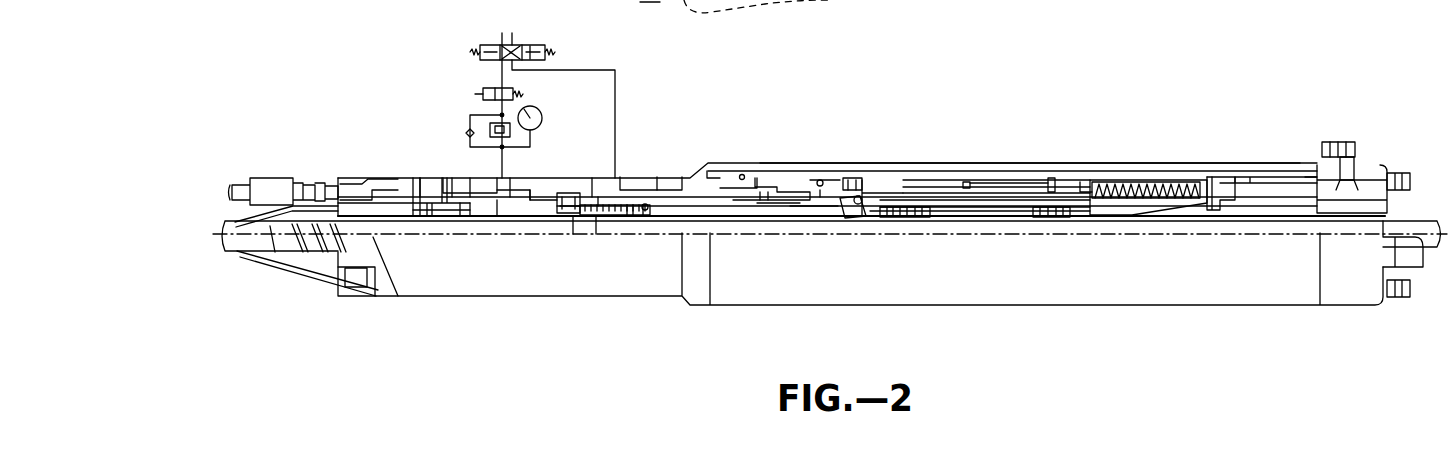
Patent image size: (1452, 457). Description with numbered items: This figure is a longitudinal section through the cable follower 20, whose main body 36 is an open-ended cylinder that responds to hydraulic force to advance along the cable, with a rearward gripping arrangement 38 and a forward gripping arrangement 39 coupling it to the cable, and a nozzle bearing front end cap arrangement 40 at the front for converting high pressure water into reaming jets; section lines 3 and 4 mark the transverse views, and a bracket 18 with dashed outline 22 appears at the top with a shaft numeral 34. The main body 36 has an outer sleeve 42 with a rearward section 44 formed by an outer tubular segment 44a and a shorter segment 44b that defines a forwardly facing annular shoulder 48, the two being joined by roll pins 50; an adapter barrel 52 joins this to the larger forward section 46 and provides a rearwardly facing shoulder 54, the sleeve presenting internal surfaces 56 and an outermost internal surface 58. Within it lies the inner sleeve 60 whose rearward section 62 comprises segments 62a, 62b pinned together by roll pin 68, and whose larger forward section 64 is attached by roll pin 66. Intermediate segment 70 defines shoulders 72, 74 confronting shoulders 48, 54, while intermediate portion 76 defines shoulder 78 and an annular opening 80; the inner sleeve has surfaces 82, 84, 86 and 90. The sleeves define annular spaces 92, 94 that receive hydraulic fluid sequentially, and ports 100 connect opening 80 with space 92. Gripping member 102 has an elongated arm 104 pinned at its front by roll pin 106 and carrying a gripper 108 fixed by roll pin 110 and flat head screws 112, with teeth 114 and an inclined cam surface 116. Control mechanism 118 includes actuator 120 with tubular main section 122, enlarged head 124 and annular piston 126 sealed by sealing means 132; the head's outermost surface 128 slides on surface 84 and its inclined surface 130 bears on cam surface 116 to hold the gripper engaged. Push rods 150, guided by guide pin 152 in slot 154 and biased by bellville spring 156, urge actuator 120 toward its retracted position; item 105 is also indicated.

The section line 3- 3 is at (252, 343).
The section line 4- 4 is at (866, 353).
The mounting structure 18 is at (635, 3).
The cable follower 20 is at (1015, 76).
The support 22 is at (693, 8).
The shaft 34 is at (603, 240).
The main body 36 is at (812, 150).
The rearward gripping arrangement 38 is at (288, 295).
The forward gripping arrangement 39 is at (775, 326).
The nozzle bearing front end cap arrangement 40 is at (1402, 150).
The outer sleeve 42 is at (584, 174).
The rearward section 44 is at (452, 172).
The outer tubular segment 44a is at (423, 178).
The shorter segment 44b is at (477, 178).
The forward section 46 is at (838, 196).
The annular shoulder 48 is at (512, 192).
The roll pins 50 is at (430, 178).
The adapter barrel 52 is at (692, 165).
The annular shoulder 54 is at (628, 195).
The internal surfaces 56 is at (390, 195).
The outermost internal surface 58 is at (742, 175).
The inner sleeve 60 is at (572, 240).
The rearward section 62 is at (480, 233).
The segment 62a is at (462, 217).
The segment 62b is at (440, 212).
The forward section 64 is at (937, 168).
The roll pin 66 is at (757, 202).
The roll pin 68 is at (419, 205).
The intermediate segment 70 is at (572, 193).
The annular shoulder 72 is at (555, 195).
The annular shoulder 74 is at (592, 180).
The intermediate portion 76 is at (558, 215).
The annular shoulder 78 is at (596, 240).
The annular opening 80 is at (615, 240).
The innermost inner surface 82 is at (498, 217).
The outermost inner surface 84 is at (823, 178).
The intermediate inner surface 86 is at (648, 193).
The outermost outer surface 90 is at (895, 178).
The annular space 92 is at (598, 195).
The annular space 94 is at (527, 180).
The ports 100 is at (578, 232).
The gripping member 102 is at (1003, 220).
The elongated arm 104 is at (1137, 207).
The end plate 105 is at (1212, 177).
The roll pin 106 is at (1175, 180).
The gripper 108 is at (856, 222).
The roll pin 110 is at (896, 218).
The flat head screws 112 is at (914, 218).
The teeth 114 is at (866, 222).
The inclined cam surface 116 is at (848, 222).
The control mechanism 118 is at (828, 238).
The actuator 120 is at (806, 222).
The tubular main section 122 is at (763, 205).
The enlarged head 124 is at (857, 188).
The annular piston 126 is at (634, 216).
The radially outermost surface 128 is at (852, 188).
The inclined surface 130 is at (866, 193).
The sealing means 132 is at (643, 215).
The push rods 150 is at (982, 190).
The guide pin 152 is at (1052, 178).
The slot 154 is at (1008, 182).
The bellville spring 156 is at (1124, 182).